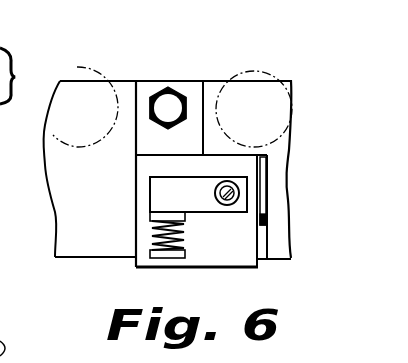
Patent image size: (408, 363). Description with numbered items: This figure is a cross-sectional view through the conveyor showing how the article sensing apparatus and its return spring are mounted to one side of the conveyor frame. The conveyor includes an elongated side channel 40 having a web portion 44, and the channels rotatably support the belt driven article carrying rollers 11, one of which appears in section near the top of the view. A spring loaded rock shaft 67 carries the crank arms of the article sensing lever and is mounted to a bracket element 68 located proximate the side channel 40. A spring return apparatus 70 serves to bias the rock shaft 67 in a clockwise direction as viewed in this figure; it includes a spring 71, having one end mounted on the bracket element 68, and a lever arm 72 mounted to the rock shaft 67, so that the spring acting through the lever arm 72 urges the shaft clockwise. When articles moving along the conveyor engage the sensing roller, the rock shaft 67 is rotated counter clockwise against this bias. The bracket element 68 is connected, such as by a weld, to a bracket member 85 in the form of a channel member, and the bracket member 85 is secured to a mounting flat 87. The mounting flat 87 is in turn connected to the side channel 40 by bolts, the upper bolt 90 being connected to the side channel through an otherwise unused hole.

The article carrying roller 11 is at (98, 70).
The side channel 40 is at (74, 236).
The web portion 44 is at (89, 169).
The rock shaft 67 is at (227, 207).
The bracket element 68 is at (217, 270).
The spring return apparatus 70 is at (143, 240).
The spring 71 is at (150, 225).
The lever arm 72 is at (198, 217).
The bracket member 85 is at (265, 225).
The mounting flat 87 is at (169, 174).
The bolt 90 is at (168, 107).